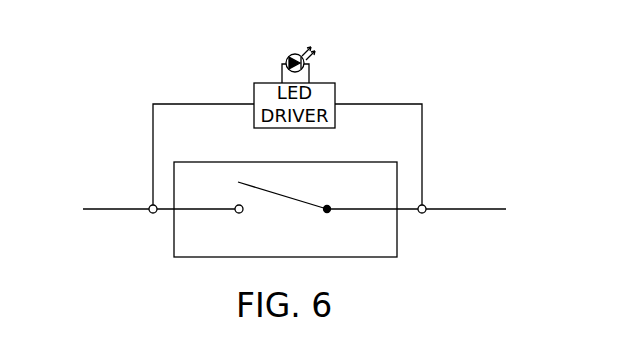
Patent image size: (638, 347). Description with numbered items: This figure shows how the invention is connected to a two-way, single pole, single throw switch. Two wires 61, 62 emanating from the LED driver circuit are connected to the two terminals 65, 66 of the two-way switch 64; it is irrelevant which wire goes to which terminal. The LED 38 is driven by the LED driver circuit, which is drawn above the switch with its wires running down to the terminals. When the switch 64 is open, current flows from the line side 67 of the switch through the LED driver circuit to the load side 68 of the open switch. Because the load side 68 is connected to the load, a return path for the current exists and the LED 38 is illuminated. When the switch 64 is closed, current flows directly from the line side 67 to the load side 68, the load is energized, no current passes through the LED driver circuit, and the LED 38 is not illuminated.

The LED 38 is at (288, 56).
The wire 61 is at (183, 104).
The wire 62 is at (402, 104).
The 2-way switch 64 is at (397, 237).
The terminal 65 is at (150, 206).
The terminal 66 is at (425, 206).
The line side 67 is at (493, 209).
The load side 68 is at (104, 209).